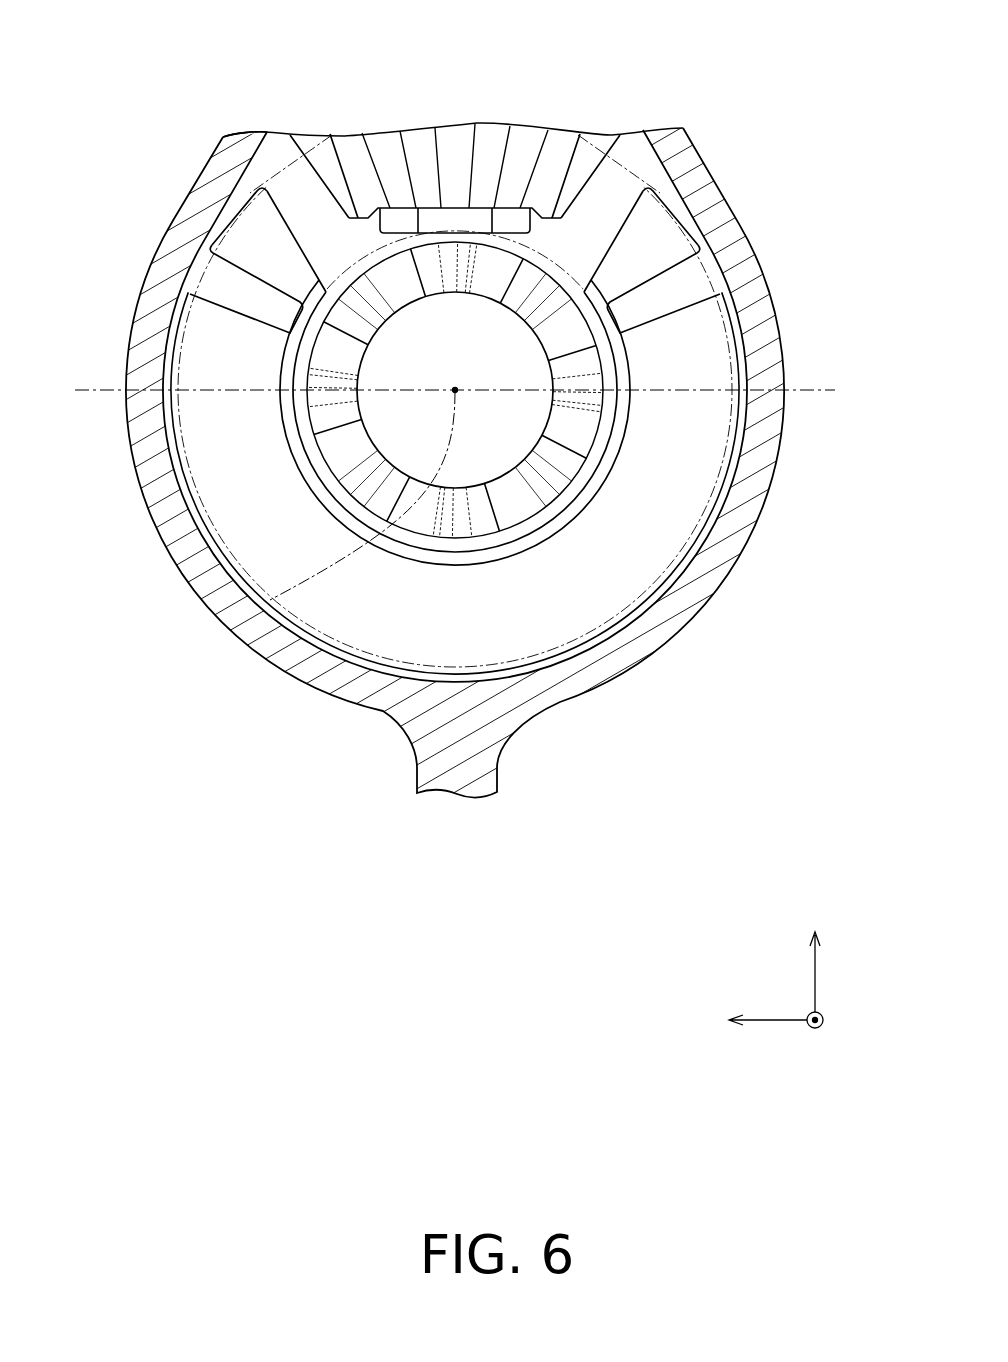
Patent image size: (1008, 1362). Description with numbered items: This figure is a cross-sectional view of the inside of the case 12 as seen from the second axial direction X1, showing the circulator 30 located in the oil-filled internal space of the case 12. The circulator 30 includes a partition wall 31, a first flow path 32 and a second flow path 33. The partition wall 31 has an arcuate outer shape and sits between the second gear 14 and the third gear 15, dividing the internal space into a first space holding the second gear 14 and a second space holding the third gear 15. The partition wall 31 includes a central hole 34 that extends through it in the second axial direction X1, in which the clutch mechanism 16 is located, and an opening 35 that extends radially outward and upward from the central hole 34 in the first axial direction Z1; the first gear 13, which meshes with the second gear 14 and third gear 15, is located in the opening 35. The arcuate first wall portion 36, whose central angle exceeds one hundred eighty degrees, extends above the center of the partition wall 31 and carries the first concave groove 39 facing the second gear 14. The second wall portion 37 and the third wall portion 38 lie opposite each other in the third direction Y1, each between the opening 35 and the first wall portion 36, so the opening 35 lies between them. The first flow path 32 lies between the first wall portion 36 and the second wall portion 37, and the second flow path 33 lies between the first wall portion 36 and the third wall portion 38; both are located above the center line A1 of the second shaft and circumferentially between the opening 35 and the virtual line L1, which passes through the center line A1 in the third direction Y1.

The case 12 is at (643, 660).
The first gear 13 is at (462, 140).
The second gear 14 is at (268, 153).
The third gear 15 is at (245, 134).
The clutch mechanism 16 is at (322, 416).
The circulator 30 is at (266, 541).
The partition wall 31 is at (344, 676).
The first flow path 32 is at (714, 266).
The second flow path 33 is at (196, 266).
The central hole 34 is at (590, 478).
The opening 35 is at (683, 128).
The first wall portion 36 is at (705, 562).
The second wall portion 37 is at (665, 232).
The third wall portion 38 is at (248, 226).
The first concave groove 39 is at (533, 617).
The virtual line L1 is at (807, 390).
The center line A1 is at (242, 643).
The second axial direction X1 is at (839, 1039).
The third direction Y1 is at (741, 1022).
The first axial direction Z1 is at (817, 951).